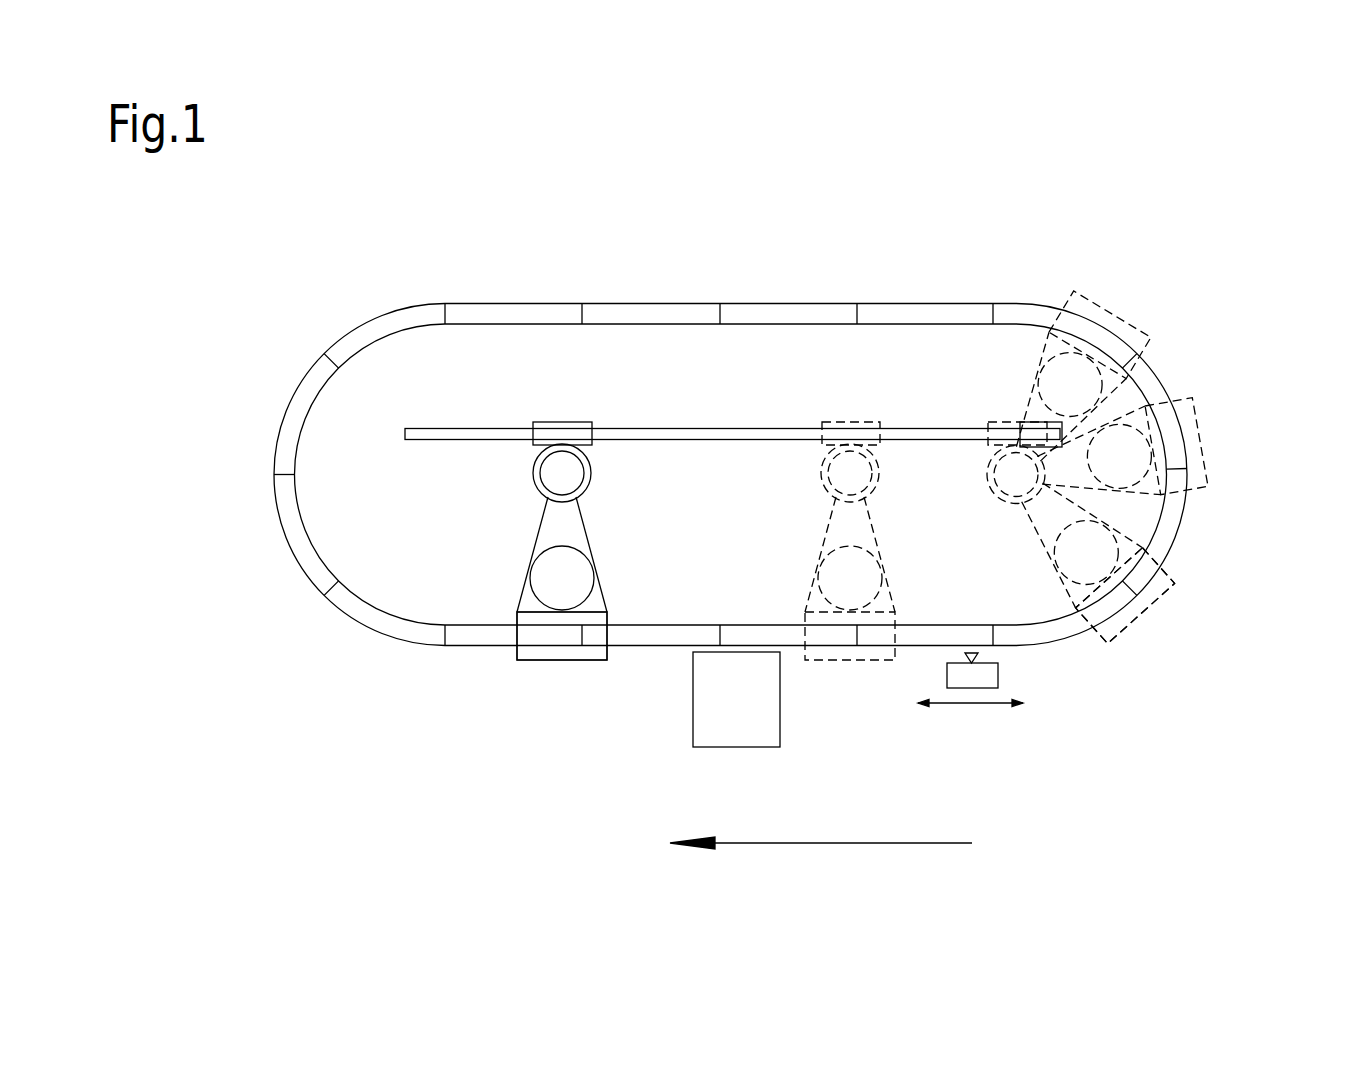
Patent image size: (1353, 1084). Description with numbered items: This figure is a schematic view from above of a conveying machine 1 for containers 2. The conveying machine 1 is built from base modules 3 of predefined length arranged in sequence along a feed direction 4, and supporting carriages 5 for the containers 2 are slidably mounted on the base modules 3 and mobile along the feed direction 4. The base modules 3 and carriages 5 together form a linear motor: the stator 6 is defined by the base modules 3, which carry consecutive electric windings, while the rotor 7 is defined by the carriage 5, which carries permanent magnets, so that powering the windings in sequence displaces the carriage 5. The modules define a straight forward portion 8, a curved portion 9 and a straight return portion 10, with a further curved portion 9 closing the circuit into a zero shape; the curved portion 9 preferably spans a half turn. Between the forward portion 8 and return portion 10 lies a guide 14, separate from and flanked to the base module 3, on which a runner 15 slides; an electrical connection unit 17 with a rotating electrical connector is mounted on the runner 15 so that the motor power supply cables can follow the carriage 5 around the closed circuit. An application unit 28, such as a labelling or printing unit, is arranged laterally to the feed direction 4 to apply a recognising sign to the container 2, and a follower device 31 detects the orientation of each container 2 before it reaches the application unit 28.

The conveying machine 1 is at (721, 505).
The container 2 is at (525, 593).
The base module 3 is at (658, 302).
The feed direction 4 is at (813, 843).
The supporting carriage 5 is at (572, 633).
The stator 6 is at (458, 283).
The rotor 7 is at (550, 658).
The straight forward portion 8 is at (468, 658).
The curved portion 9 is at (305, 372).
The straight return portion 10 is at (623, 283).
The guide 14 is at (772, 428).
The runner 15 is at (562, 420).
The electrical connection unit 17 is at (528, 475).
The application unit 28 is at (770, 717).
The follower device 31 is at (987, 675).